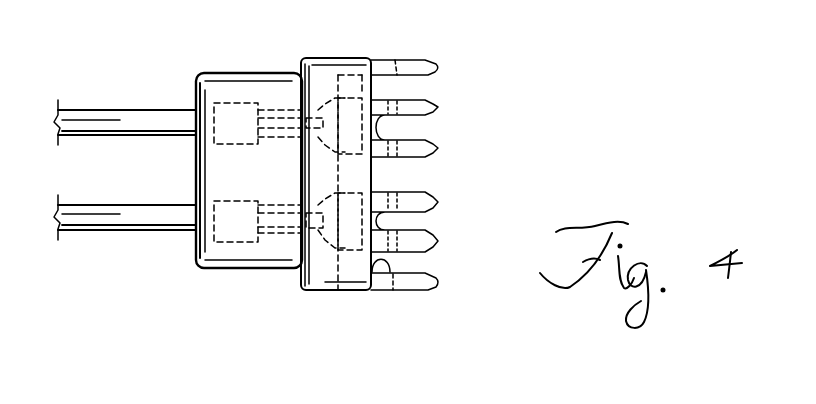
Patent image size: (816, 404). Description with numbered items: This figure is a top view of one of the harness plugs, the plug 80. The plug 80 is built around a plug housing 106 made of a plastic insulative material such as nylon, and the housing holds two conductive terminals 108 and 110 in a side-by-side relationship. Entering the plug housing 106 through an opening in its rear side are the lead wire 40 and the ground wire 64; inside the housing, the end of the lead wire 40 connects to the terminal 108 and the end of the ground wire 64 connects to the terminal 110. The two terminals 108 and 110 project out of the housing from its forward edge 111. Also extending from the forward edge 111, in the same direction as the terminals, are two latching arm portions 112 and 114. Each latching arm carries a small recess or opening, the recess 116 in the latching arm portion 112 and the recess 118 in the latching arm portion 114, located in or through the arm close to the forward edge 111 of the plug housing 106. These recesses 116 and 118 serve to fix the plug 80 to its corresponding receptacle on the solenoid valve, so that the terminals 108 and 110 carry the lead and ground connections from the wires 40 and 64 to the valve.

The lead wire 40 is at (132, 232).
The ground wire 64 is at (112, 120).
The plug 80 is at (305, 54).
The plug housing 106 is at (323, 68).
The terminal 108 is at (438, 252).
The terminal 110 is at (431, 159).
The forward edge 111 is at (386, 291).
The latching arm portion 112 is at (437, 291).
The latching arm portion 114 is at (441, 60).
The recess 116 is at (393, 290).
The recess 118 is at (397, 58).